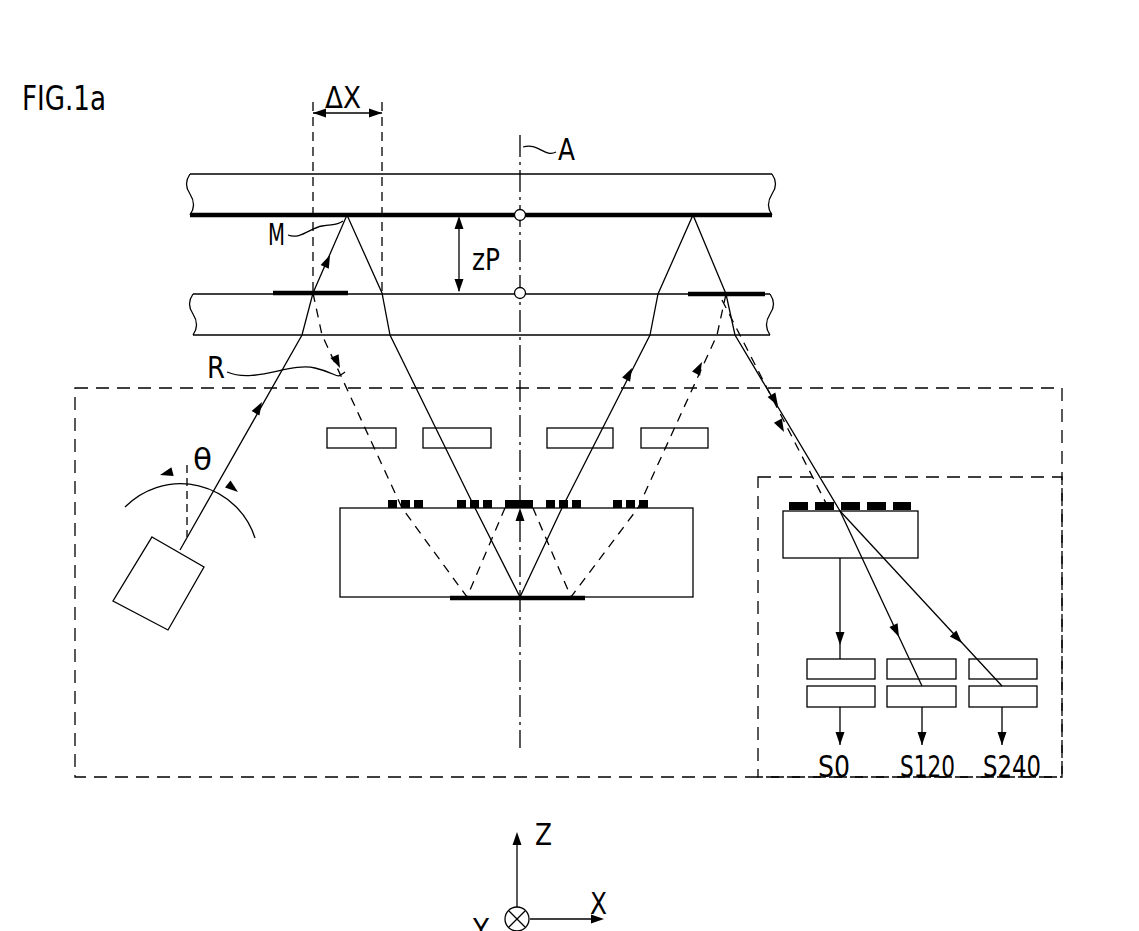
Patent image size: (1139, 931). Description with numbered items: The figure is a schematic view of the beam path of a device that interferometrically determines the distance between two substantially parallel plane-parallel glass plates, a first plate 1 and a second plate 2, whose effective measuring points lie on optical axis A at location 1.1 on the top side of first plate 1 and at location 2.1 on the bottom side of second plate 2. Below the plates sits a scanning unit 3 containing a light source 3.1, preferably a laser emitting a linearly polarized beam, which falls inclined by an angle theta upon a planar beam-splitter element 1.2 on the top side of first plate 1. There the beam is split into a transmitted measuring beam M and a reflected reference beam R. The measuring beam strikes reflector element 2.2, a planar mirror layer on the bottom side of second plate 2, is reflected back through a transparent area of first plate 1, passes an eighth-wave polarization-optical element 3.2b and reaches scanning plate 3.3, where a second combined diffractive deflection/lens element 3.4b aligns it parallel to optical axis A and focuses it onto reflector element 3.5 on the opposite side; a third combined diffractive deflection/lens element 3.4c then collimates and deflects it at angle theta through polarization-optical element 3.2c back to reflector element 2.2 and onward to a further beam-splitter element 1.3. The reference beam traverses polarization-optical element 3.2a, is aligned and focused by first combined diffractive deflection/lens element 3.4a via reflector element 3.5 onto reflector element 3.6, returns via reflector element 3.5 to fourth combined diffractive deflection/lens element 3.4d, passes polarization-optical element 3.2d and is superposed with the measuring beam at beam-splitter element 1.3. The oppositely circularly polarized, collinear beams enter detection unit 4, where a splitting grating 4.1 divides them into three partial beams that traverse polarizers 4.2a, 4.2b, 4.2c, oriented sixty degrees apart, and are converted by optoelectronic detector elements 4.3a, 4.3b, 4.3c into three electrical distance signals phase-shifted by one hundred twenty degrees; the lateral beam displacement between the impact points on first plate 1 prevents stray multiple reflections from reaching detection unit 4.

The first plate 1 is at (767, 308).
The location 1.1 is at (527, 292).
The beam-splitter element 1.2 is at (300, 291).
The beam-splitter element 1.3 is at (748, 292).
The second plate 2 is at (759, 191).
The location 2.1 is at (525, 218).
The reflector element 2.2 is at (213, 220).
The scanning unit 3 is at (1045, 424).
The light source 3.1 is at (175, 605).
The polarization-optical element 3.2a is at (388, 437).
The polarization-optical element 3.2b is at (448, 437).
The polarization-optical element 3.2c is at (580, 437).
The polarization-optical element 3.2d is at (655, 437).
The scanning plate 3.3 is at (400, 590).
The first combined diffractive deflection/lens element 3.4a is at (395, 500).
The second combined diffractive deflection/lens element 3.4b is at (458, 503).
The third combined diffractive deflection/lens element 3.4c is at (578, 503).
The fourth combined diffractive deflection/lens element 3.4d is at (638, 503).
The reflector element 3.5 is at (550, 600).
The reflector element 3.6 is at (518, 500).
The detection unit 4 is at (1035, 503).
The splitting grating 4.1 is at (872, 502).
The polarizer 4.2a is at (822, 670).
The polarizer 4.2b is at (935, 662).
The polarizer 4.2c is at (1012, 670).
The optoelectronic detector element 4.3a is at (820, 697).
The optoelectronic detector element 4.3b is at (900, 697).
The optoelectronic detector element 4.3c is at (982, 697).